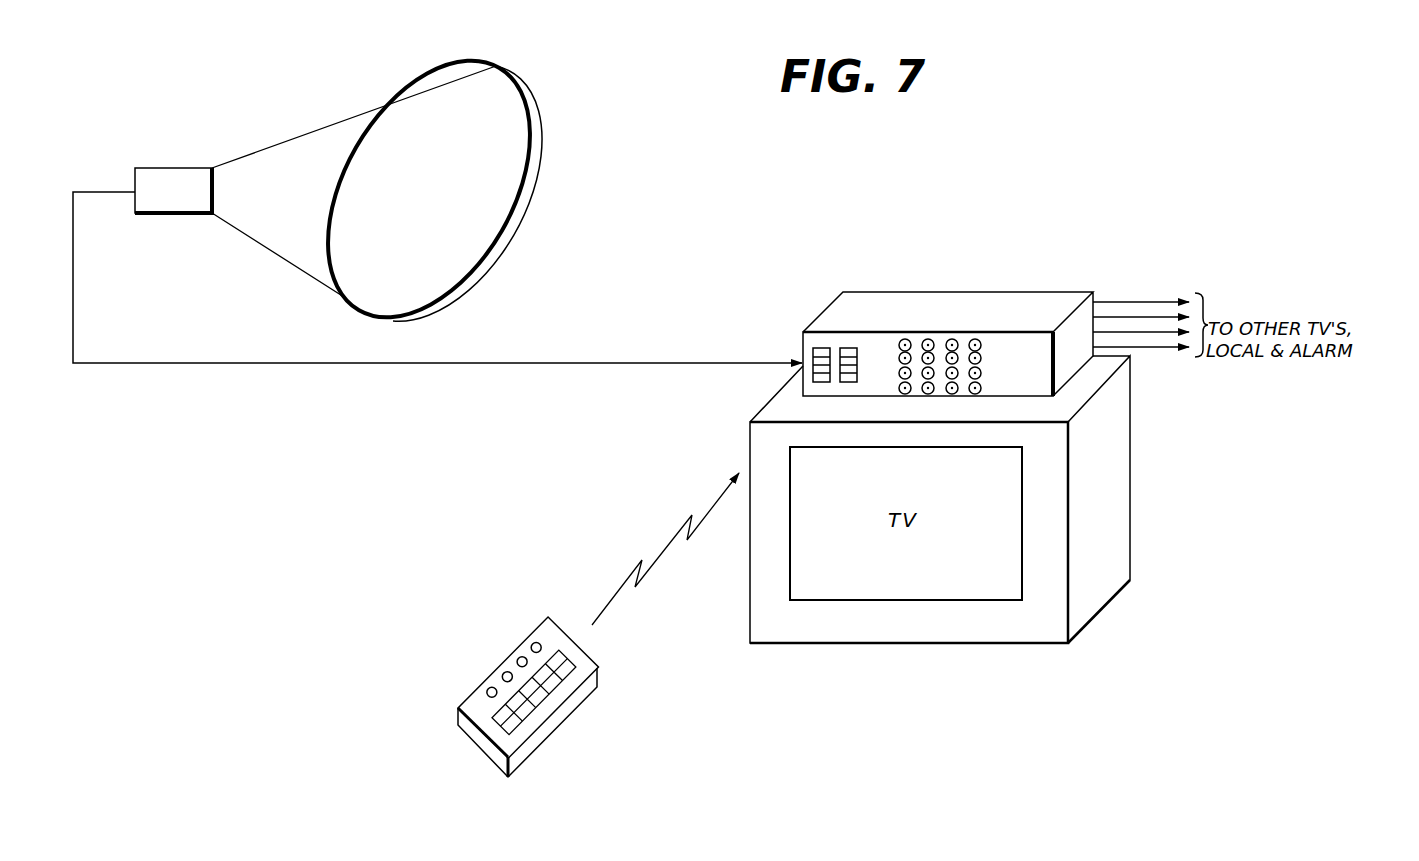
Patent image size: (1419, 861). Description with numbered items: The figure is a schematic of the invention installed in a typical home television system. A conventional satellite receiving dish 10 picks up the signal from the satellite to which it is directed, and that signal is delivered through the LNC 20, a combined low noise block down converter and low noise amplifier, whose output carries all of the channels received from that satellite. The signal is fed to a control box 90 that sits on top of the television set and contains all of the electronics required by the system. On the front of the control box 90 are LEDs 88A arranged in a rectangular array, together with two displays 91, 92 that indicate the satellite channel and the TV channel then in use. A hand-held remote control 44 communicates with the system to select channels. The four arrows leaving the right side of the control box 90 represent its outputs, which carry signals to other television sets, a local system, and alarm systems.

The satellite receiving dish 10 is at (537, 202).
The LNC 20 is at (153, 168).
The remote control 44 is at (486, 672).
The LEDs 88A is at (917, 343).
The control box 90 is at (928, 313).
The display 91 is at (820, 348).
The display 92 is at (848, 348).